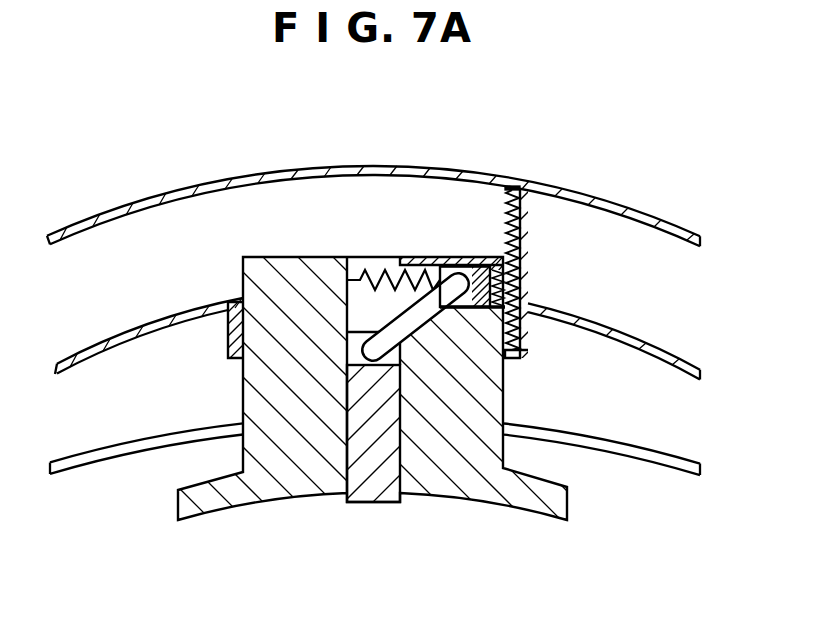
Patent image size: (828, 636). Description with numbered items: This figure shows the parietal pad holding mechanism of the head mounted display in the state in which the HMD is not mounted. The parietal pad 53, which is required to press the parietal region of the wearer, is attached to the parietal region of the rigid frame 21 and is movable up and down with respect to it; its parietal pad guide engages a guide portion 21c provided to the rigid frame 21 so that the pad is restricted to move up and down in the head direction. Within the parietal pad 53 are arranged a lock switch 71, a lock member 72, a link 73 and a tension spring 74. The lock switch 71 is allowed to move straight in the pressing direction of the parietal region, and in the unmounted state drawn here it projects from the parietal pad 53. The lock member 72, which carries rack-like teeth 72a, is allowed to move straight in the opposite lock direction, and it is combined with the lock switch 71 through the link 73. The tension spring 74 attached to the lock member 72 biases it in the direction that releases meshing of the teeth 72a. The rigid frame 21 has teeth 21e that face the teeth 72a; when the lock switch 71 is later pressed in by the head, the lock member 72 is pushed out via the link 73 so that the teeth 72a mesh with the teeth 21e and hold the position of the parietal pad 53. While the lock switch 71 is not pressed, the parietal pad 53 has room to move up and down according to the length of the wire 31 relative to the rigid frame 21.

The rigid frame 21 is at (177, 195).
The guide portion 21c is at (232, 332).
The teeth 21e is at (528, 237).
The wire 31 is at (133, 445).
The parietal pad 53 is at (268, 478).
The lock switch 71 is at (377, 495).
The lock member 72 is at (467, 267).
The teeth 72a is at (480, 267).
The link 73 is at (420, 313).
The tension spring 74 is at (380, 273).